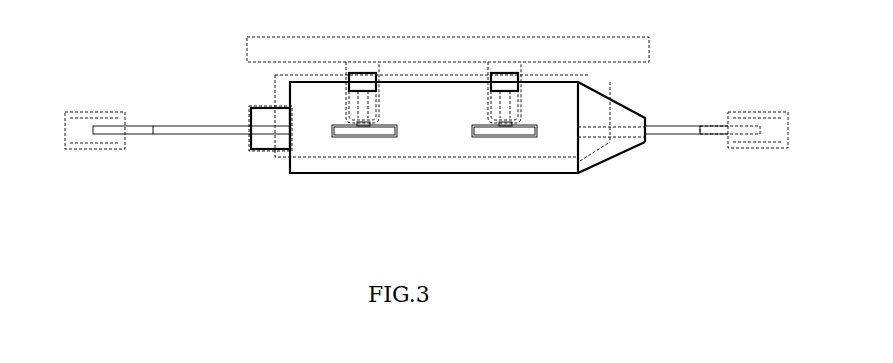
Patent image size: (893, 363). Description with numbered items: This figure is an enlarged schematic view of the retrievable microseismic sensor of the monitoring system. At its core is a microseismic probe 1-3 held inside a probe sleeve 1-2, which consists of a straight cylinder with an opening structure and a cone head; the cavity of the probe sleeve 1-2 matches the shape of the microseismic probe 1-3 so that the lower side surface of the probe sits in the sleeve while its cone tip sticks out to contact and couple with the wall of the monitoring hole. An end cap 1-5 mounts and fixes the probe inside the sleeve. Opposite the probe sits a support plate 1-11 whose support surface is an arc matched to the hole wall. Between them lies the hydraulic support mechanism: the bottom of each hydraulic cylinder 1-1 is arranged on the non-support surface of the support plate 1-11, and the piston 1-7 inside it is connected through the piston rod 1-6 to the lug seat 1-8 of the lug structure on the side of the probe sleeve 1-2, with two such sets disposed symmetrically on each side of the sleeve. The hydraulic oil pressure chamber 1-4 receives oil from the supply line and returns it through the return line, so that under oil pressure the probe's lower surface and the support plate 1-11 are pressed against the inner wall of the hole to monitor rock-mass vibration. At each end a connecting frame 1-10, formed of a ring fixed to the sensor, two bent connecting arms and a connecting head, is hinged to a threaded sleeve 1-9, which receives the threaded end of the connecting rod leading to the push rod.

The hydraulic cylinder 1-1 is at (522, 103).
The probe sleeve 1-2 is at (588, 75).
The microseismic probe 1-3 is at (603, 153).
The hydraulic oil pressure chamber 1-4 is at (512, 73).
The end cap 1-5 is at (278, 88).
The piston rod 1-6 is at (367, 110).
The piston 1-7 is at (378, 91).
The lug seat 1-8 is at (388, 136).
The threaded sleeve 1-9 is at (88, 148).
The connecting frame 1-10 is at (687, 132).
The support plate 1-11 is at (637, 47).